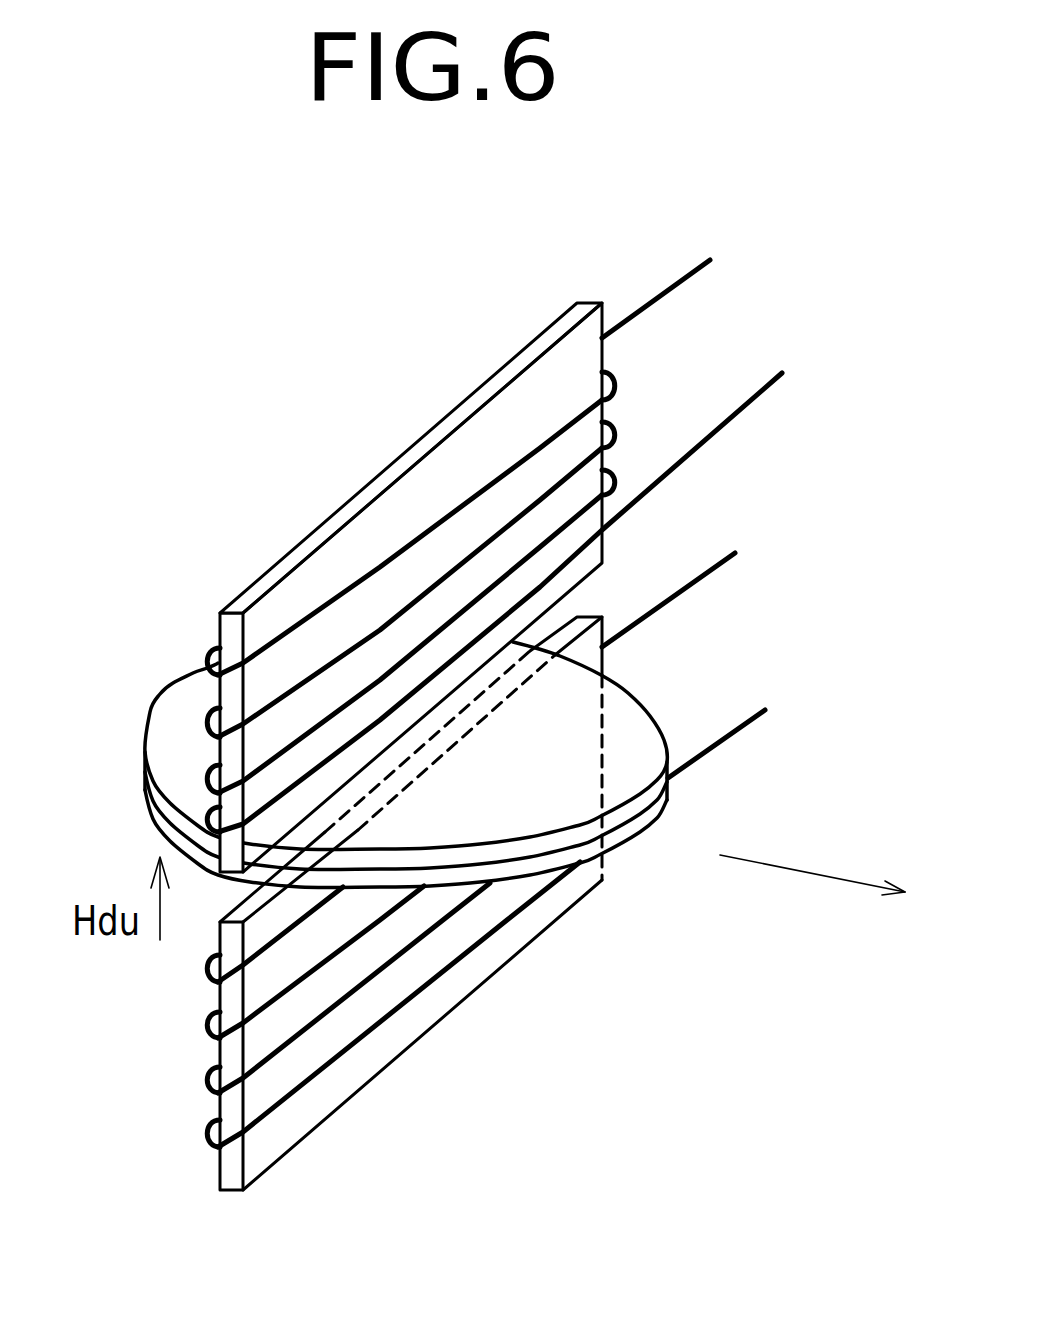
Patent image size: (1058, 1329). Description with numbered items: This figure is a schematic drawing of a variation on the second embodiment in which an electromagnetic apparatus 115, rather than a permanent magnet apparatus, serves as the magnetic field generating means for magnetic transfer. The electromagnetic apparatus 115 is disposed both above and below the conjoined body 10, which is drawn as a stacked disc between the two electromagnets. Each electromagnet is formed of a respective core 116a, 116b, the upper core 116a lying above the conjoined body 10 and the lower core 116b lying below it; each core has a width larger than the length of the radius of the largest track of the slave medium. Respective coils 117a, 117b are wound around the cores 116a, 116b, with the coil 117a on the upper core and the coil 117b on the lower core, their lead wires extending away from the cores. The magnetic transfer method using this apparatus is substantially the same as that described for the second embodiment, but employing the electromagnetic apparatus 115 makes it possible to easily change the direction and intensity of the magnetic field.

The conjoined body 10 is at (163, 722).
The electromagnetic apparatus 115 is at (200, 425).
The core 116a is at (528, 348).
The core 116b is at (335, 1113).
The coil 117a is at (670, 283).
The coil 117b is at (403, 1008).